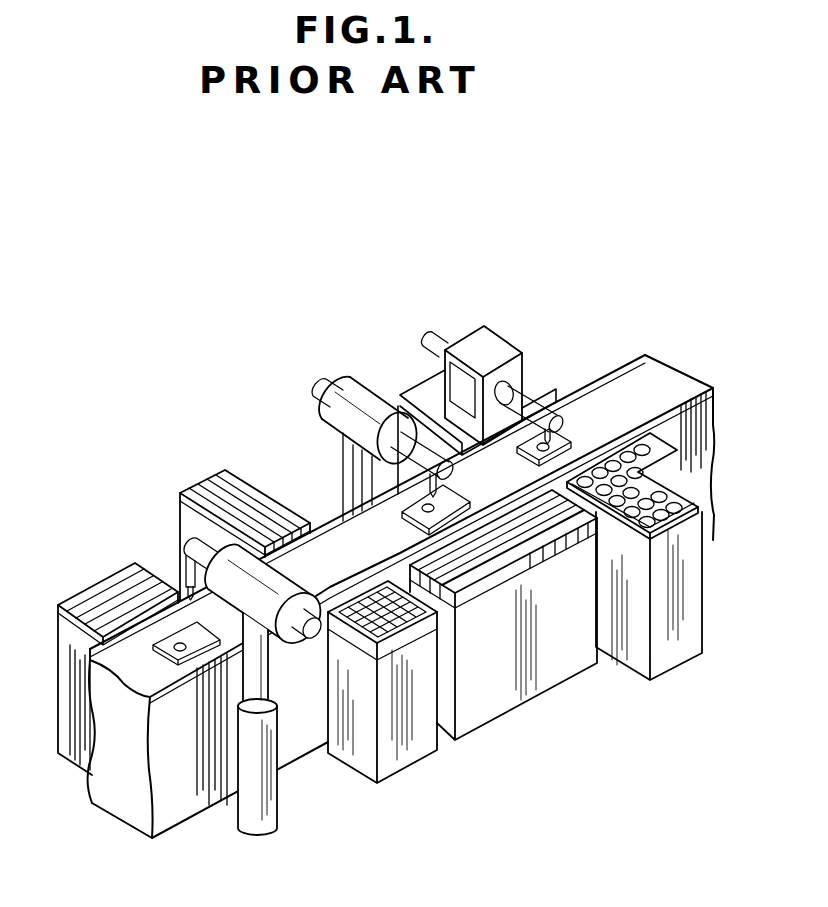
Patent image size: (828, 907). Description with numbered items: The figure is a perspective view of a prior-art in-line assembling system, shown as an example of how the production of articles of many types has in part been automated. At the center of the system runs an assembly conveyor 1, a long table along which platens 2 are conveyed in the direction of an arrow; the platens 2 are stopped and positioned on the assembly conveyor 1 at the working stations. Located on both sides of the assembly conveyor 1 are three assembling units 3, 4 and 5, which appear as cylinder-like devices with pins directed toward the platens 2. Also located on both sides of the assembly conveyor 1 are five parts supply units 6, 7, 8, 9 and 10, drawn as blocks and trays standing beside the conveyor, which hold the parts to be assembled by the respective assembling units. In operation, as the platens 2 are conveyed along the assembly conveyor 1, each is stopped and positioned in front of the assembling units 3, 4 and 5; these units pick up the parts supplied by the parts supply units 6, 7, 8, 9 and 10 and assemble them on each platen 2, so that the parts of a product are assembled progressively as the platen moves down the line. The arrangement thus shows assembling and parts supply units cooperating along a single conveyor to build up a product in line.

The assembly conveyor 1 is at (700, 358).
The platens 2 is at (567, 437).
The assembling unit 3 is at (468, 345).
The assembling unit 4 is at (378, 403).
The assembling unit 5 is at (277, 770).
The parts supply unit 6 is at (198, 488).
The parts supply unit 7 is at (107, 593).
The parts supply unit 8 is at (420, 748).
The parts supply unit 9 is at (548, 678).
The parts supply unit 10 is at (680, 650).